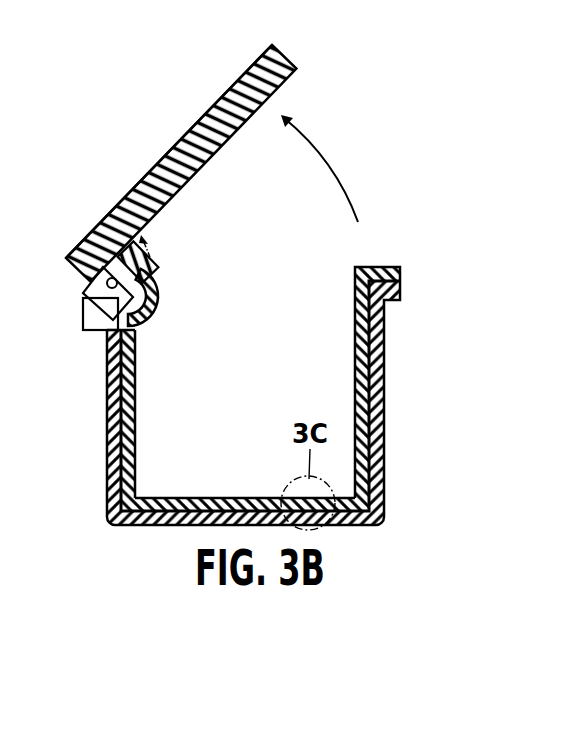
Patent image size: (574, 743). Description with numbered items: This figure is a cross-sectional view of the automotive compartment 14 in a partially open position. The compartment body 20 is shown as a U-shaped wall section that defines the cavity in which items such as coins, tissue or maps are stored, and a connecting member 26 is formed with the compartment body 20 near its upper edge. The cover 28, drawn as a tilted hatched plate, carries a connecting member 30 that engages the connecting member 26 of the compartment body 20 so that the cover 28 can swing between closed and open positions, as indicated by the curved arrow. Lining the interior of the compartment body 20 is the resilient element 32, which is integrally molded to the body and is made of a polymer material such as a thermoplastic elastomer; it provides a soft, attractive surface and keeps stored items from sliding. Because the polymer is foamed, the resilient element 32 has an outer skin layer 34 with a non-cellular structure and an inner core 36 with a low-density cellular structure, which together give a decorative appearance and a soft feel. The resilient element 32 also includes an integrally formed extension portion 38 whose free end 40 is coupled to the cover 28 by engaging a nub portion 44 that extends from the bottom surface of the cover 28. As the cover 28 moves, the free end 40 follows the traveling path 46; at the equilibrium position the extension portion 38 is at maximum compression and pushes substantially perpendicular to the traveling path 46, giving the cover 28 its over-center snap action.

The automotive compartment 14 is at (212, 164).
The compartment body 20 is at (275, 396).
The connecting members 26 is at (82, 323).
The cover 28 is at (158, 159).
The connecting members 30 is at (78, 287).
The resilient element 32 is at (243, 498).
The outer skin layer 34 is at (138, 346).
The inner core 36 is at (137, 417).
The extension portion 38 is at (158, 316).
The free end 40 is at (99, 303).
The nub portion 44 is at (147, 277).
The traveling path 46 is at (152, 258).